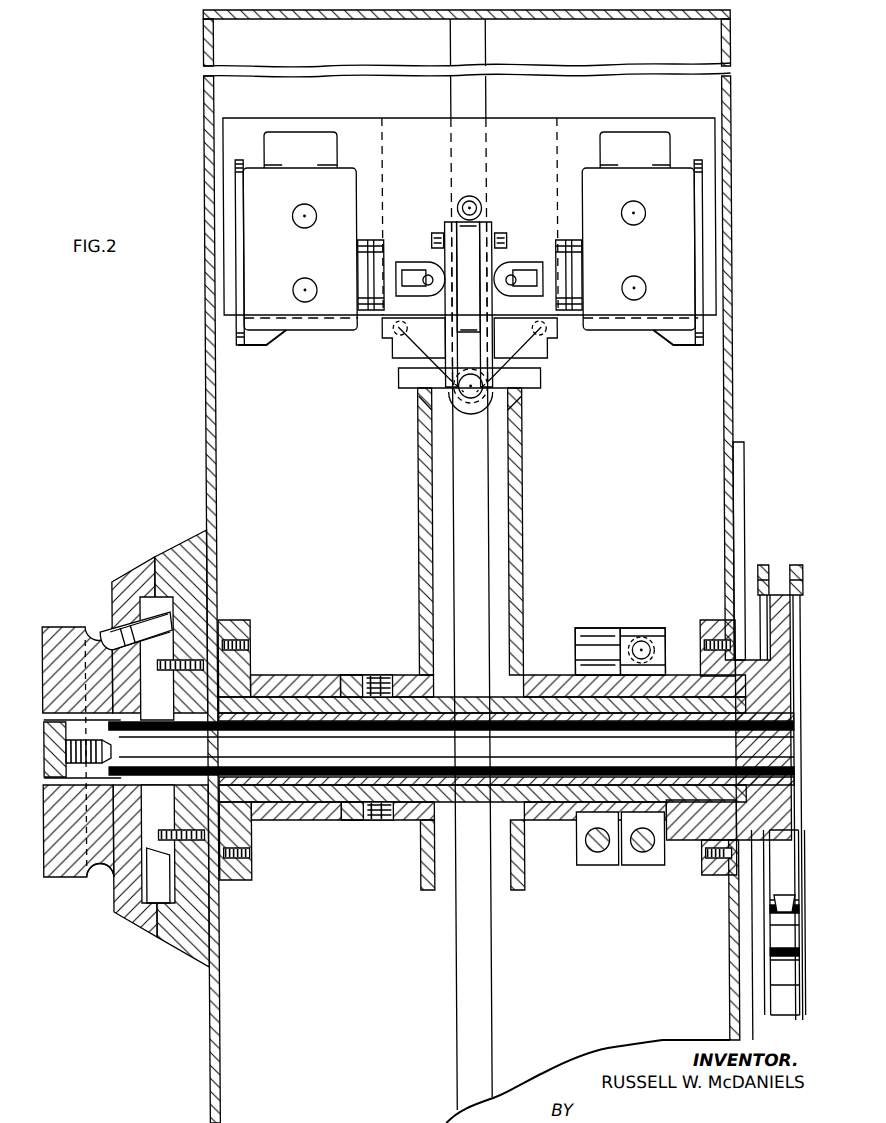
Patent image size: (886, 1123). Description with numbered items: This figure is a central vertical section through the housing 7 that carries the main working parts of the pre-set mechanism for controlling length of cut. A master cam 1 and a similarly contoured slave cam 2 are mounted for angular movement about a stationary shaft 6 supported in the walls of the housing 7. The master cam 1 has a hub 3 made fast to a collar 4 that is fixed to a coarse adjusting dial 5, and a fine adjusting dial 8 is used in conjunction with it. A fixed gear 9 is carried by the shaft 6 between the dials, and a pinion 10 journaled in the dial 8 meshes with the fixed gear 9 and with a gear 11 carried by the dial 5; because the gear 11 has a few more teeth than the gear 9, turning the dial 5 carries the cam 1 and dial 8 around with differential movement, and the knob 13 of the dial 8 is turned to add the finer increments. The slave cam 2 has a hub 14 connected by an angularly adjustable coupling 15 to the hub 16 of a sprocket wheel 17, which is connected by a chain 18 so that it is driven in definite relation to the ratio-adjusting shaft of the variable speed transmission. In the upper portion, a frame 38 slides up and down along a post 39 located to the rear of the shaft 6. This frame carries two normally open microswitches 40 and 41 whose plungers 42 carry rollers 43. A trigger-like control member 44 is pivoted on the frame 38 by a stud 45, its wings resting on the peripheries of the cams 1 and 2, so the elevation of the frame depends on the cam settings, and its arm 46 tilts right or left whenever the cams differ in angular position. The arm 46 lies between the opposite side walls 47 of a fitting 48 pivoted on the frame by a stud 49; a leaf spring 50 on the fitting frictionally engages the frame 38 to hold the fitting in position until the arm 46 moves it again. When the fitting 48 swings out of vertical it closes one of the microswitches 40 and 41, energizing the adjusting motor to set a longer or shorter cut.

The master cam 1 is at (419, 513).
The slave cam 2 is at (523, 530).
The hub 3 is at (364, 690).
The collar 4 is at (286, 694).
The coarse adjusting dial 5 is at (170, 542).
The stationary shaft 6 is at (778, 736).
The housing 7 is at (207, 453).
The fine adjusting dial 8 is at (132, 574).
The fixed gear 9 is at (125, 882).
The pinion 10 is at (140, 624).
The gear 11 is at (170, 640).
The knob 13 is at (66, 630).
The hub 14 is at (545, 676).
The angularly adjustable coupling 15 is at (608, 862).
The hub 16 is at (672, 694).
The sprocket wheel 17 is at (778, 580).
The chain 18 is at (775, 819).
The frame 38 is at (364, 122).
The post 39 is at (489, 48).
The microswitch 40 is at (350, 180).
The microswitch 41 is at (610, 180).
The plungers 42 is at (362, 272).
The rollers 43 is at (430, 264).
The trigger-like control member 44 is at (440, 396).
The stud 45 is at (505, 396).
The arm 46 is at (466, 322).
The side walls 47 is at (452, 222).
The fitting 48 is at (483, 218).
The stud 49 is at (471, 197).
The leaf spring 50 is at (521, 300).